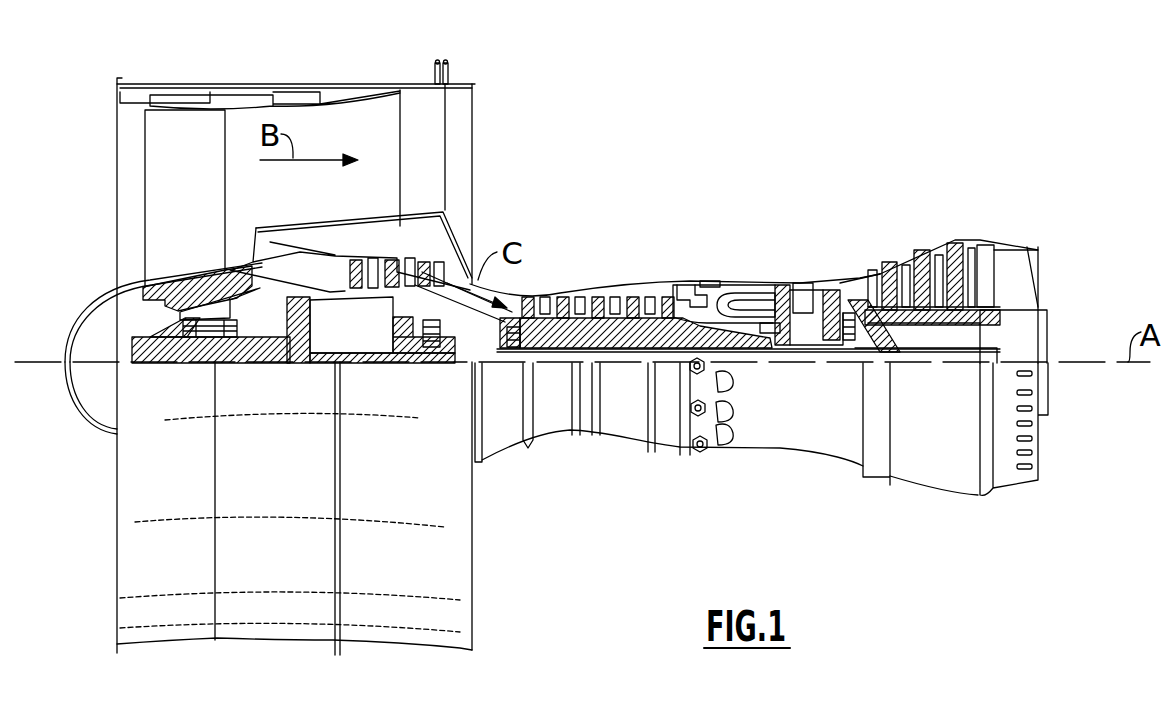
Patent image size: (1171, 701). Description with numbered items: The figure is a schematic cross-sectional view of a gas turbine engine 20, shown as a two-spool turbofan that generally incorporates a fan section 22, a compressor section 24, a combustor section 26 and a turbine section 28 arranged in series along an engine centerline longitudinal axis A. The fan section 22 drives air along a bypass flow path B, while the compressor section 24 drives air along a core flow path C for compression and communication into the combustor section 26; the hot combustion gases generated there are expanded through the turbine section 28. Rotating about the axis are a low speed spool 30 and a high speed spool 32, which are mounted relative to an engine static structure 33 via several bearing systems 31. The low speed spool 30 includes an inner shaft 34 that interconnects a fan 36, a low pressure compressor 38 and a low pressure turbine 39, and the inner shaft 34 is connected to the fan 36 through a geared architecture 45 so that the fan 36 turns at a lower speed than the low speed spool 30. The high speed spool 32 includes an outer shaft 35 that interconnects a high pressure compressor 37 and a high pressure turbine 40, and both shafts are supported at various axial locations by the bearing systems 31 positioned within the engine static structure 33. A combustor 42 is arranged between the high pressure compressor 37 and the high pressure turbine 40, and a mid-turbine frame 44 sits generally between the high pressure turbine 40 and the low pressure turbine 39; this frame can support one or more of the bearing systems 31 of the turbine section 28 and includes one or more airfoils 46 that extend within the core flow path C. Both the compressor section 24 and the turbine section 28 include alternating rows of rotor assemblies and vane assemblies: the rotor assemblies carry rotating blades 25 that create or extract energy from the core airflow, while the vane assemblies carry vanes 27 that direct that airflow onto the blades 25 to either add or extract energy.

The gas turbine engine 20 is at (752, 130).
The fan section 22 is at (222, 78).
The compressor section 24 is at (526, 265).
The blades 25 is at (356, 268).
The combustor section 26 is at (741, 255).
The vanes 27 is at (380, 268).
The turbine section 28 is at (888, 220).
The low speed spool 30 is at (625, 374).
The bearing systems 31 is at (210, 335).
The high speed spool 32 is at (668, 292).
The engine static structure 33 is at (666, 455).
The inner shaft 34 is at (490, 368).
The outer shaft 35 is at (748, 360).
The fan 36 is at (168, 214).
The high pressure compressor 37 is at (603, 335).
The low pressure compressor 38 is at (410, 264).
The low pressure turbine 39 is at (924, 262).
The high pressure turbine 40 is at (802, 285).
The combustor 42 is at (745, 296).
The mid-turbine frame 44 is at (850, 272).
The geared architecture 45 is at (300, 335).
The airfoils 46 is at (843, 298).